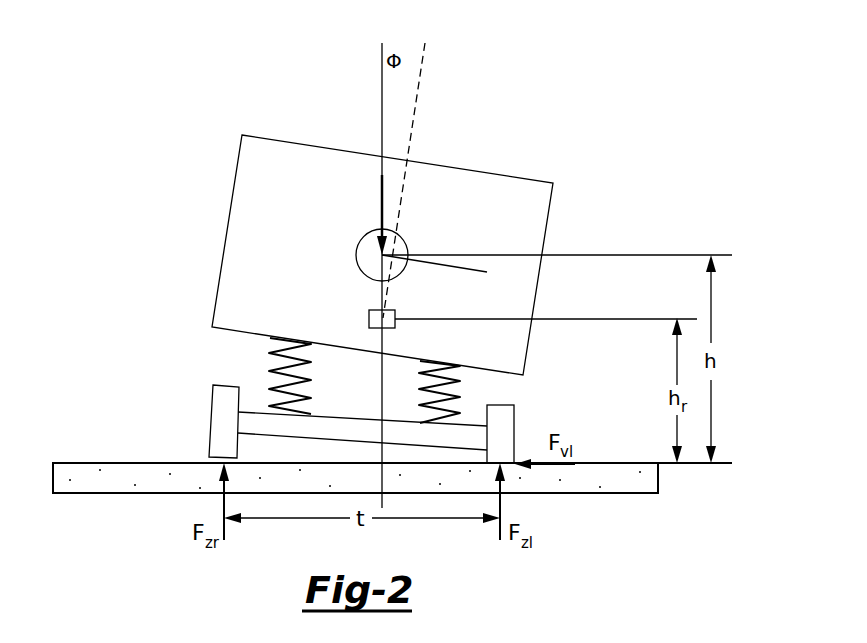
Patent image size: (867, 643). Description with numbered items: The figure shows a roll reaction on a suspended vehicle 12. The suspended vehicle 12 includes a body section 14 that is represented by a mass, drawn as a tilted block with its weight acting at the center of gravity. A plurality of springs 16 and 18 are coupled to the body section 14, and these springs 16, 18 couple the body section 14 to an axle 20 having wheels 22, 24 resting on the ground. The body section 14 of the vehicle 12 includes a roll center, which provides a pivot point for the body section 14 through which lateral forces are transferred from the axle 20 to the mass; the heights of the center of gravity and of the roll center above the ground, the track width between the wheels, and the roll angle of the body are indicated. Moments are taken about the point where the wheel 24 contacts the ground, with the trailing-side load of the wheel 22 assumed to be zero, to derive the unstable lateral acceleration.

The suspended vehicle 12 is at (622, 188).
The body section 14 is at (228, 230).
The spring 16 is at (272, 358).
The spring 18 is at (462, 380).
The axle 20 is at (342, 417).
The wheel 22 is at (208, 425).
The wheel 24 is at (514, 437).